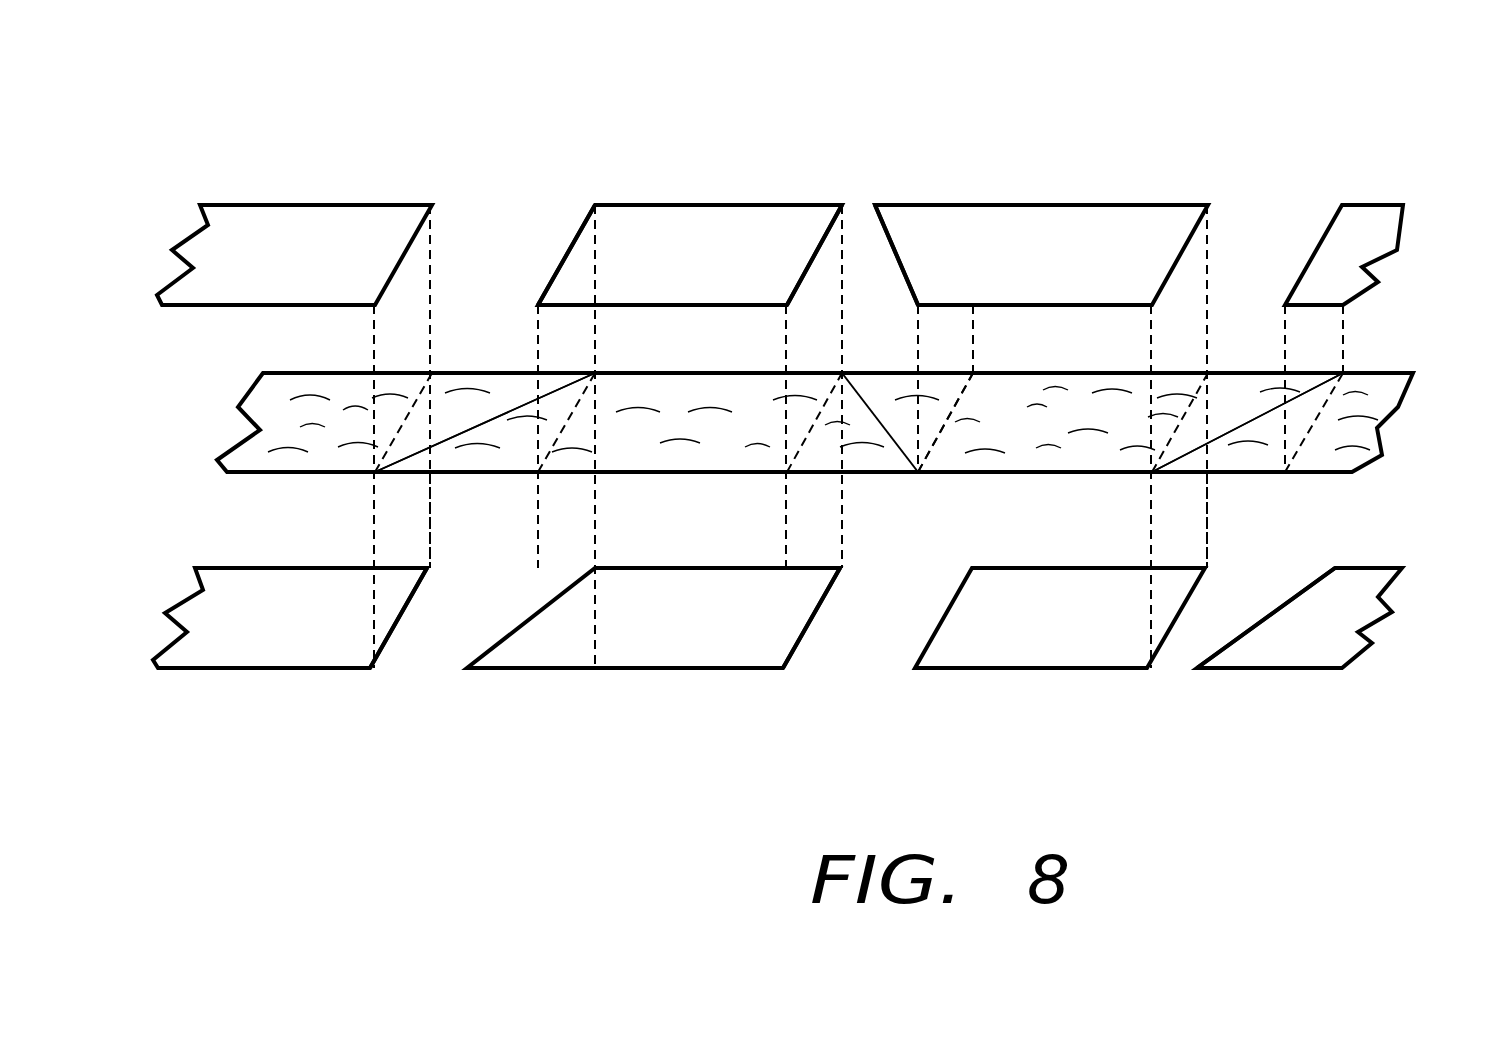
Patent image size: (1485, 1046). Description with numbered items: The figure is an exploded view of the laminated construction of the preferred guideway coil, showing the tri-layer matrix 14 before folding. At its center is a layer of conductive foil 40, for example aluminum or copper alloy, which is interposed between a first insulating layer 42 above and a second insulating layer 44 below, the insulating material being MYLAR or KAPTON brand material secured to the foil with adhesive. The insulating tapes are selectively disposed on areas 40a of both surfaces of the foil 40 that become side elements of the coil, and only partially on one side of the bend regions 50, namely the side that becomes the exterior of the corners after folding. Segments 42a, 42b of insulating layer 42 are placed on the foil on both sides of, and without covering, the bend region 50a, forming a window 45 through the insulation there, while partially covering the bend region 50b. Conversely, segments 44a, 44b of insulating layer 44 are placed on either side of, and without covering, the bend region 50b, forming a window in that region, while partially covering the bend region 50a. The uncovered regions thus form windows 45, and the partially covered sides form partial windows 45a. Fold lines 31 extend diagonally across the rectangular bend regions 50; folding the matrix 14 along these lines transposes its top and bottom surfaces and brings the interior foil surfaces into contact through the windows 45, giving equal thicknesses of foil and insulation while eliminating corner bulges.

The matrix 14 is at (1267, 215).
The fold lines 31 is at (430, 472).
The conductive foil 40 is at (1377, 383).
The areas of the foil 40a is at (640, 460).
The first insulating layer 42 is at (700, 210).
The segment of insulating layer 42a is at (813, 215).
The segment of insulating layer 42b is at (1033, 218).
The second insulating layer 44 is at (1313, 660).
The segment of insulating layer 44a is at (735, 657).
The segment of insulating layer 44b is at (1030, 673).
The windows 45 is at (570, 242).
The partial windows 45a is at (435, 660).
The bend regions 50 is at (1253, 403).
The bend region 50a is at (490, 383).
The bend region 50b is at (945, 412).